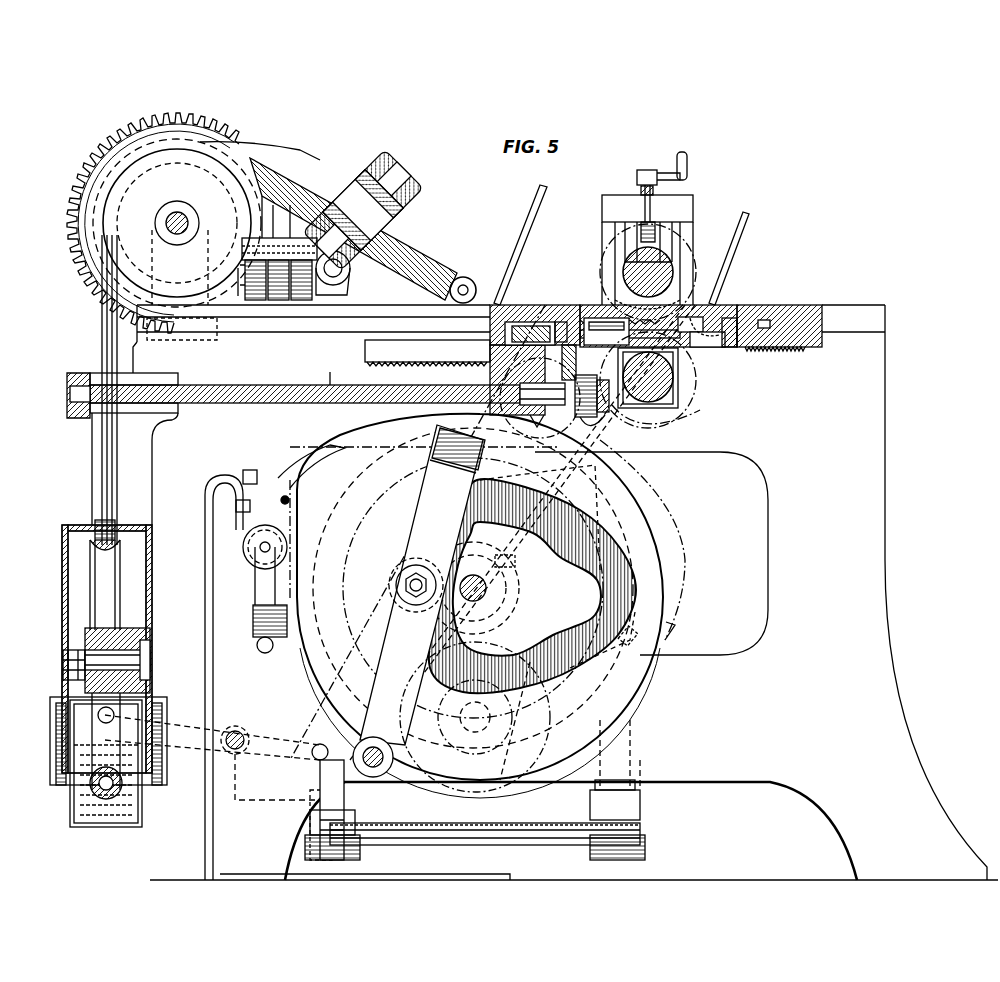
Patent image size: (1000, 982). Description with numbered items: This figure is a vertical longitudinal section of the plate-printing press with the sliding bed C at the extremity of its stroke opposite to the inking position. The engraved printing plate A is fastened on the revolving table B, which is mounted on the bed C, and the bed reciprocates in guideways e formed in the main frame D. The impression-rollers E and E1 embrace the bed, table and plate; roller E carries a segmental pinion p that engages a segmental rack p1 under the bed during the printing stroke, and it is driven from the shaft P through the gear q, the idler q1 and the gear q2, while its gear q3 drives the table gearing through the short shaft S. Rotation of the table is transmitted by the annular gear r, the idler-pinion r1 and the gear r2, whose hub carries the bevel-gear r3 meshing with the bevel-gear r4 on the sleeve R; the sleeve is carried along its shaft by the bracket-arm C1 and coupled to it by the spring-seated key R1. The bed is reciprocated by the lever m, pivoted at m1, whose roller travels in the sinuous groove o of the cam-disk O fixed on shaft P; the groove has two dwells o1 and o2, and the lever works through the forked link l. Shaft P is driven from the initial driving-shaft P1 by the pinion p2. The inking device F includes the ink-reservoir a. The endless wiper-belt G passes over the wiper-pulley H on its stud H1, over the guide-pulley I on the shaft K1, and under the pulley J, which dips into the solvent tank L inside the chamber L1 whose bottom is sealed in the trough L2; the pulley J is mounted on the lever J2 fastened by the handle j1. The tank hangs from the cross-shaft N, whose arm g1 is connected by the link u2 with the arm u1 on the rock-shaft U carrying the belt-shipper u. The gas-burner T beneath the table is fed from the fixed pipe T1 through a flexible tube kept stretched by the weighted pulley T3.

The main frame D is at (800, 748).
The guideways e is at (511, 323).
The guide-pulley I is at (177, 223).
The shaft K1 is at (188, 223).
The wiper-belt G is at (476, 280).
The wiper-pulley H is at (412, 253).
The stud H1 is at (392, 178).
The ink-reservoir a is at (296, 390).
The inking device F is at (280, 300).
The bracket-arm C1 is at (490, 352).
The forked link l is at (326, 370).
The tubular sleeve R is at (540, 400).
The spring-seated key R1 is at (512, 325).
The gear r2 is at (546, 325).
The bevel-gear r3 is at (590, 378).
The bevel-gear r4 is at (565, 418).
The short shaft S is at (596, 418).
The printing plate A is at (733, 312).
The revolving table B is at (755, 312).
The sliding bed C is at (805, 310).
The segmental rack p1 is at (780, 349).
The gas-burner T is at (705, 345).
The annular gear r is at (738, 346).
The impression-roller E1 is at (623, 270).
The idler-pinion r1 is at (690, 288).
The impression-roller E is at (680, 385).
The gear q3 is at (700, 392).
The gear q2 is at (690, 406).
The segmental pinion p is at (660, 402).
The cam-disk O is at (476, 606).
The shaft P is at (478, 578).
The gear q is at (532, 586).
The cam-groove o is at (633, 610).
The period of dwell o1 is at (473, 534).
The period of dwell o2 is at (566, 648).
The idler q1 is at (666, 500).
The lever m is at (430, 470).
The pivot m1 is at (355, 745).
The initial driving-shaft P1 is at (492, 717).
The pinion p2 is at (515, 721).
The fixed gas pipe T1 is at (205, 570).
The weighted pulley T3 is at (254, 589).
The chamber L1 is at (66, 553).
The pulley J is at (95, 582).
The lever J2 is at (150, 647).
The handle j1 is at (63, 668).
The trough L2 is at (53, 725).
The tank L is at (110, 812).
The cross-shaft N is at (235, 754).
The arm g1 is at (298, 748).
The link u2 is at (310, 800).
The rock-shaft U is at (560, 835).
The arm u1 is at (305, 847).
The belt-shipper u is at (630, 805).